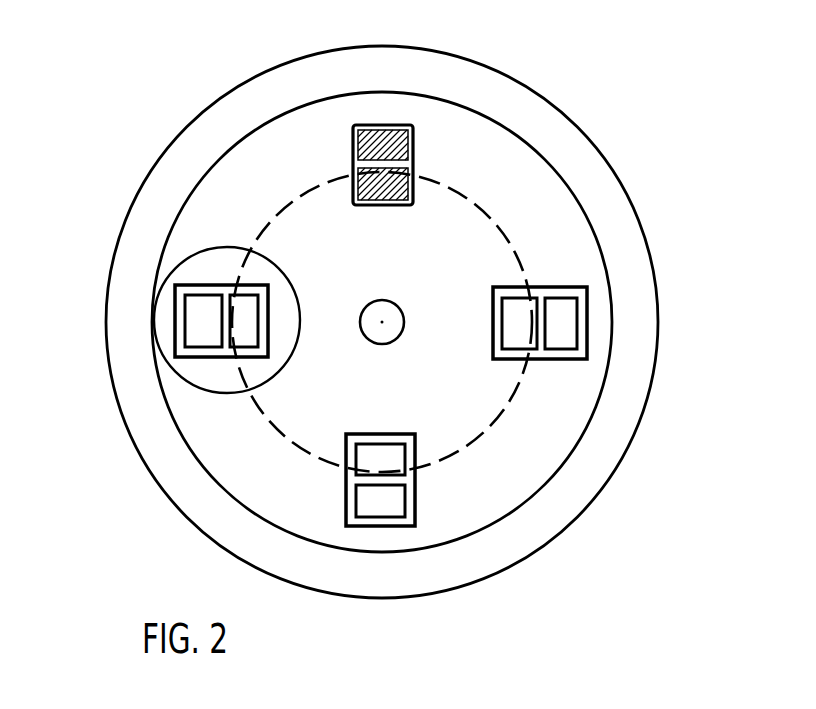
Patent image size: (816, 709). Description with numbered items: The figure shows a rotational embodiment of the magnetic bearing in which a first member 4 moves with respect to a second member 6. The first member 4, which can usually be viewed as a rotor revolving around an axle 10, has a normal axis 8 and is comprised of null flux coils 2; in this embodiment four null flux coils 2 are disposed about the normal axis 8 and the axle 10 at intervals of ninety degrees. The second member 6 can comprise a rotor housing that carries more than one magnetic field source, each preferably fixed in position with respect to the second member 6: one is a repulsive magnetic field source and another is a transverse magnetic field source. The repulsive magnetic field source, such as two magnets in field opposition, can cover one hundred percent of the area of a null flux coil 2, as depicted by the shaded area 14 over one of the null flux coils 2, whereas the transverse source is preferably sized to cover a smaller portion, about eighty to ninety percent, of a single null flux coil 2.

The null flux coil 2 is at (190, 357).
The first member 4 is at (200, 463).
The second member 6 is at (143, 173).
The normal axis 8 is at (382, 328).
The axle 10 is at (403, 305).
The shaded area 14 is at (413, 148).